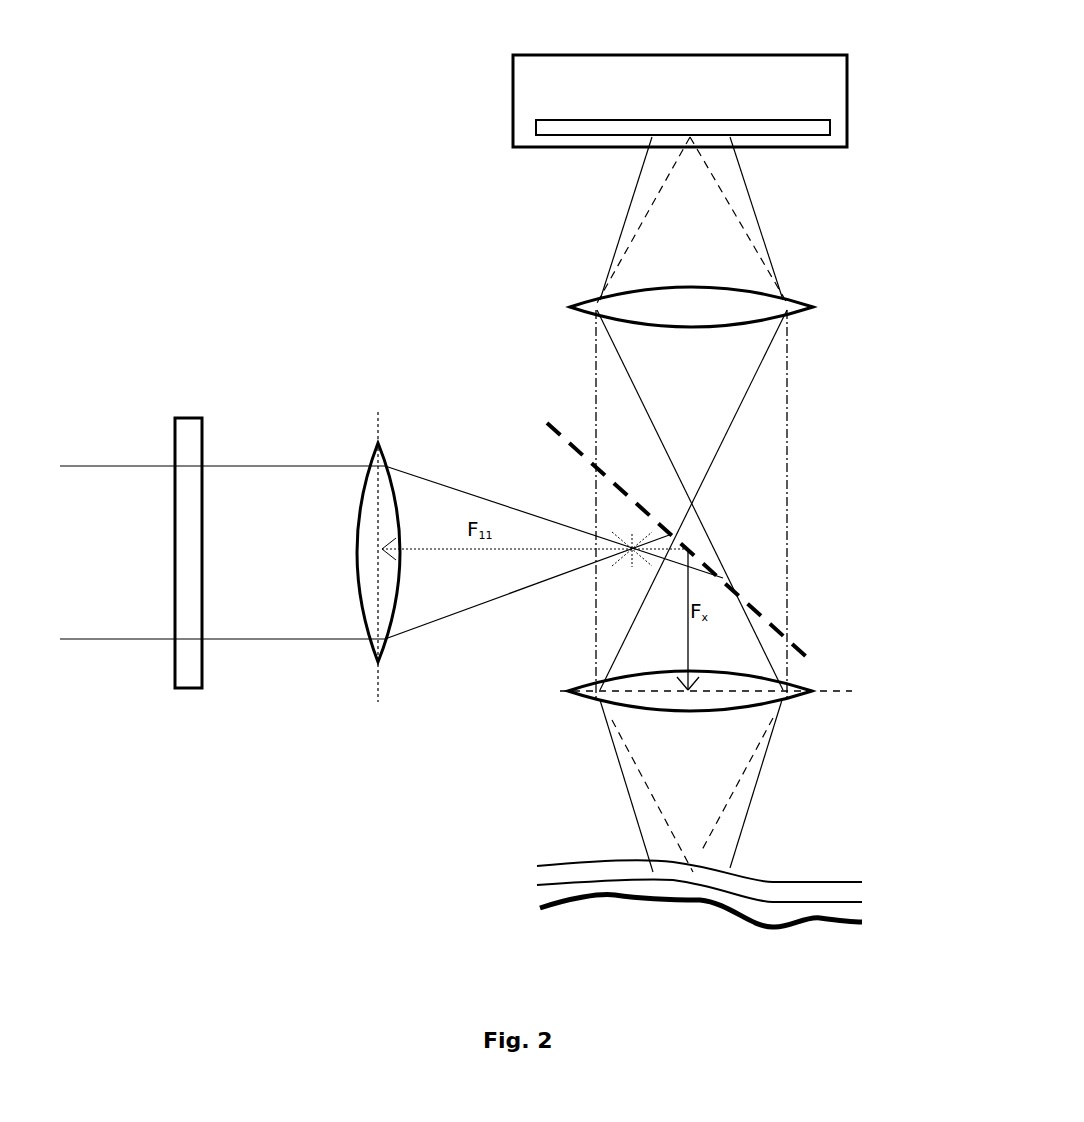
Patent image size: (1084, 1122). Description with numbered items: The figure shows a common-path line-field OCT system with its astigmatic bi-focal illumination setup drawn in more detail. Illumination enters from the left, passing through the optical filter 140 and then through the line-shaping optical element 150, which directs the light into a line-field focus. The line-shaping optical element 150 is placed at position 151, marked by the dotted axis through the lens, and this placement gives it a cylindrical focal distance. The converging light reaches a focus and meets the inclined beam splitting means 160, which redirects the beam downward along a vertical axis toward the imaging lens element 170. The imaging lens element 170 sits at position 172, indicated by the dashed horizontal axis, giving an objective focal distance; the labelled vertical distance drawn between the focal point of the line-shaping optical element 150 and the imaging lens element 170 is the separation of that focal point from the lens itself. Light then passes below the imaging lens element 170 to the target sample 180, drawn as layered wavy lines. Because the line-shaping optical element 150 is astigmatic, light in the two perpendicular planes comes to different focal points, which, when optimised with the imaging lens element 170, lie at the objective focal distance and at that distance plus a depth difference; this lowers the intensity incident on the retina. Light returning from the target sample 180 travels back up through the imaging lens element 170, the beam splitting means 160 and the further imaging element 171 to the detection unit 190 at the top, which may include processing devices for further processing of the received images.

The optical filter 140 is at (185, 526).
The line-shaping optical element 150 is at (404, 542).
The position of the line-shaping optical element 151 is at (387, 533).
The beam splitting means 160 is at (713, 541).
The imaging lens element 170 is at (657, 691).
The further imaging element 171 is at (657, 307).
The position of the imaging lens element 172 is at (737, 693).
The target sample 180 is at (661, 893).
The detection unit 190 is at (680, 101).